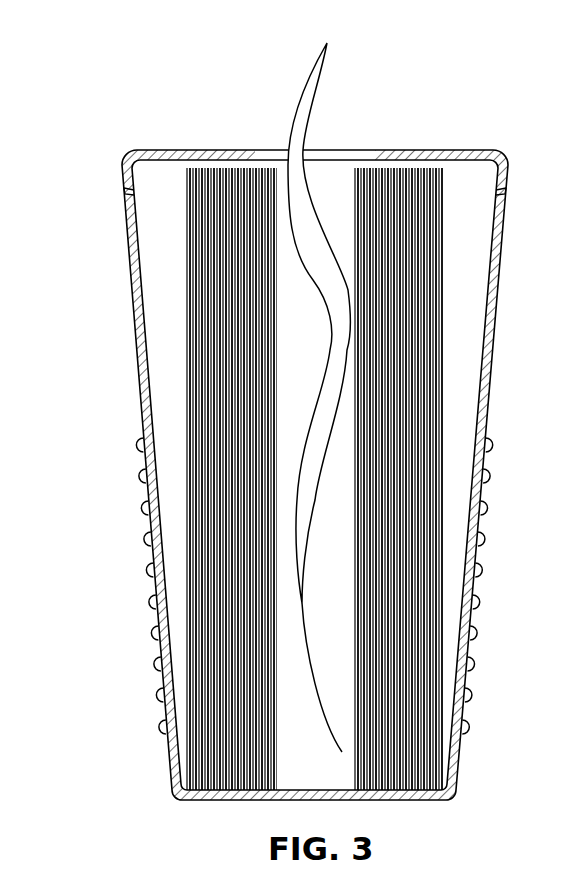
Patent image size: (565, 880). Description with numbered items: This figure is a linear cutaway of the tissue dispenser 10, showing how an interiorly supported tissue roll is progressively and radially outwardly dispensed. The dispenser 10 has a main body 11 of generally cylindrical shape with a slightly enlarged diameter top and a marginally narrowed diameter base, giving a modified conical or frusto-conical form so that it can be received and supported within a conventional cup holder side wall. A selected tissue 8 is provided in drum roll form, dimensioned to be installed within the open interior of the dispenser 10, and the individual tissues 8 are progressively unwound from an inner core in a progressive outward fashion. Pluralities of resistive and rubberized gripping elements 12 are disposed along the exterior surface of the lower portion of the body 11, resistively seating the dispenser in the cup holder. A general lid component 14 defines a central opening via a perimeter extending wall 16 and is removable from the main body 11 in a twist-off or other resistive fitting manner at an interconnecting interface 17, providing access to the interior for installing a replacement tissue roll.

The tissue 8 is at (292, 102).
The dispenser 10 is at (284, 448).
The main body 11 is at (141, 347).
The gripping elements 12 is at (155, 635).
The lid component 14 is at (132, 158).
The perimeter extending wall 16 is at (255, 152).
The interconnecting interface 17 is at (505, 190).